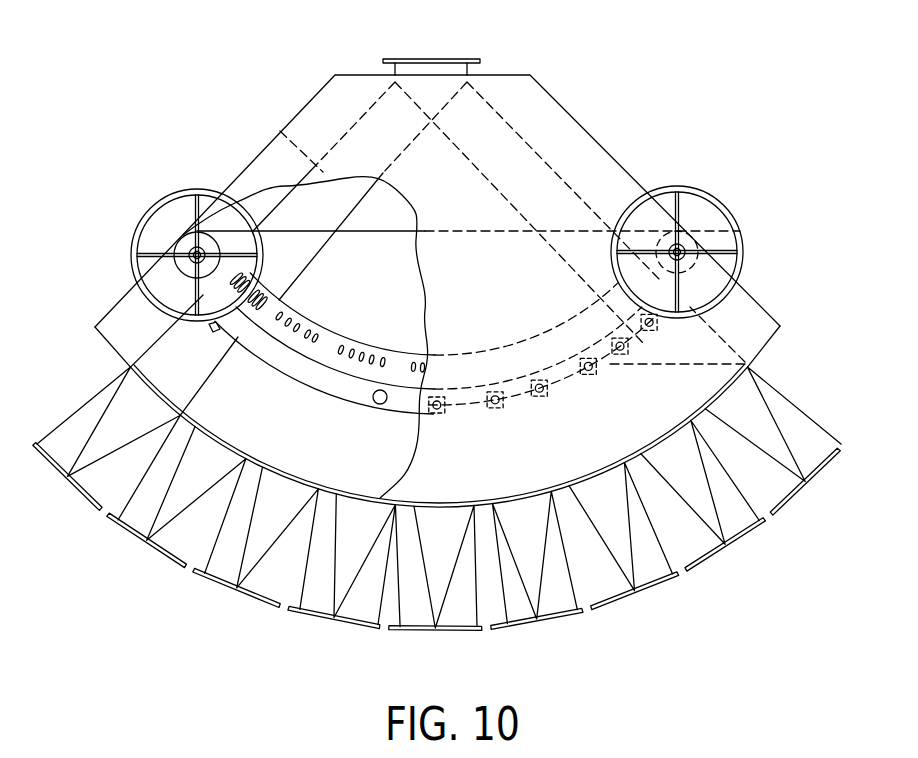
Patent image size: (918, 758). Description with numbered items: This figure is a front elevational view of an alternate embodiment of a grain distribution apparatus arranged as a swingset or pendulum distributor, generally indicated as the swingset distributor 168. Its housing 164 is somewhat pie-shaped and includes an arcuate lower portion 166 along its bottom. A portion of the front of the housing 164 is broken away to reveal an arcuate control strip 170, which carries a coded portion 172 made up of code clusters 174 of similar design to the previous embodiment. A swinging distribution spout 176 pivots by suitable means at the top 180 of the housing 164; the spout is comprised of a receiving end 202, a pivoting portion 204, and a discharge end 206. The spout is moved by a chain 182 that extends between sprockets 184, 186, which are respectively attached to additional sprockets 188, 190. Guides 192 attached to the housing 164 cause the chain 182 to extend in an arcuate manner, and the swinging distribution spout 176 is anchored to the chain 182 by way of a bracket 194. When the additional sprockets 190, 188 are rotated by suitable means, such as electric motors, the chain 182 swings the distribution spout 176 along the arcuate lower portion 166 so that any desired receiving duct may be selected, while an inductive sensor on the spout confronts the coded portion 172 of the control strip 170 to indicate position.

The housing 164 is at (582, 125).
The arcuate lower portion 166 is at (634, 458).
The swingset distributor 168 is at (562, 74).
The arcuate control strip 170 is at (749, 362).
The coded portion 172 is at (328, 348).
The code clusters 174 is at (273, 364).
The swinging distribution spout 176 is at (160, 381).
The top of the housing 180 is at (379, 77).
The chain 182 is at (244, 200).
The sprocket 184 is at (186, 238).
The sprocket 186 is at (744, 223).
The additional sprocket 188 is at (188, 257).
The additional sprocket 190 is at (742, 263).
The guides 192 is at (538, 380).
The bracket 194 is at (130, 366).
The receiving end 202 is at (478, 71).
The pivoting portion 204 is at (306, 158).
The discharge end 206 is at (147, 352).